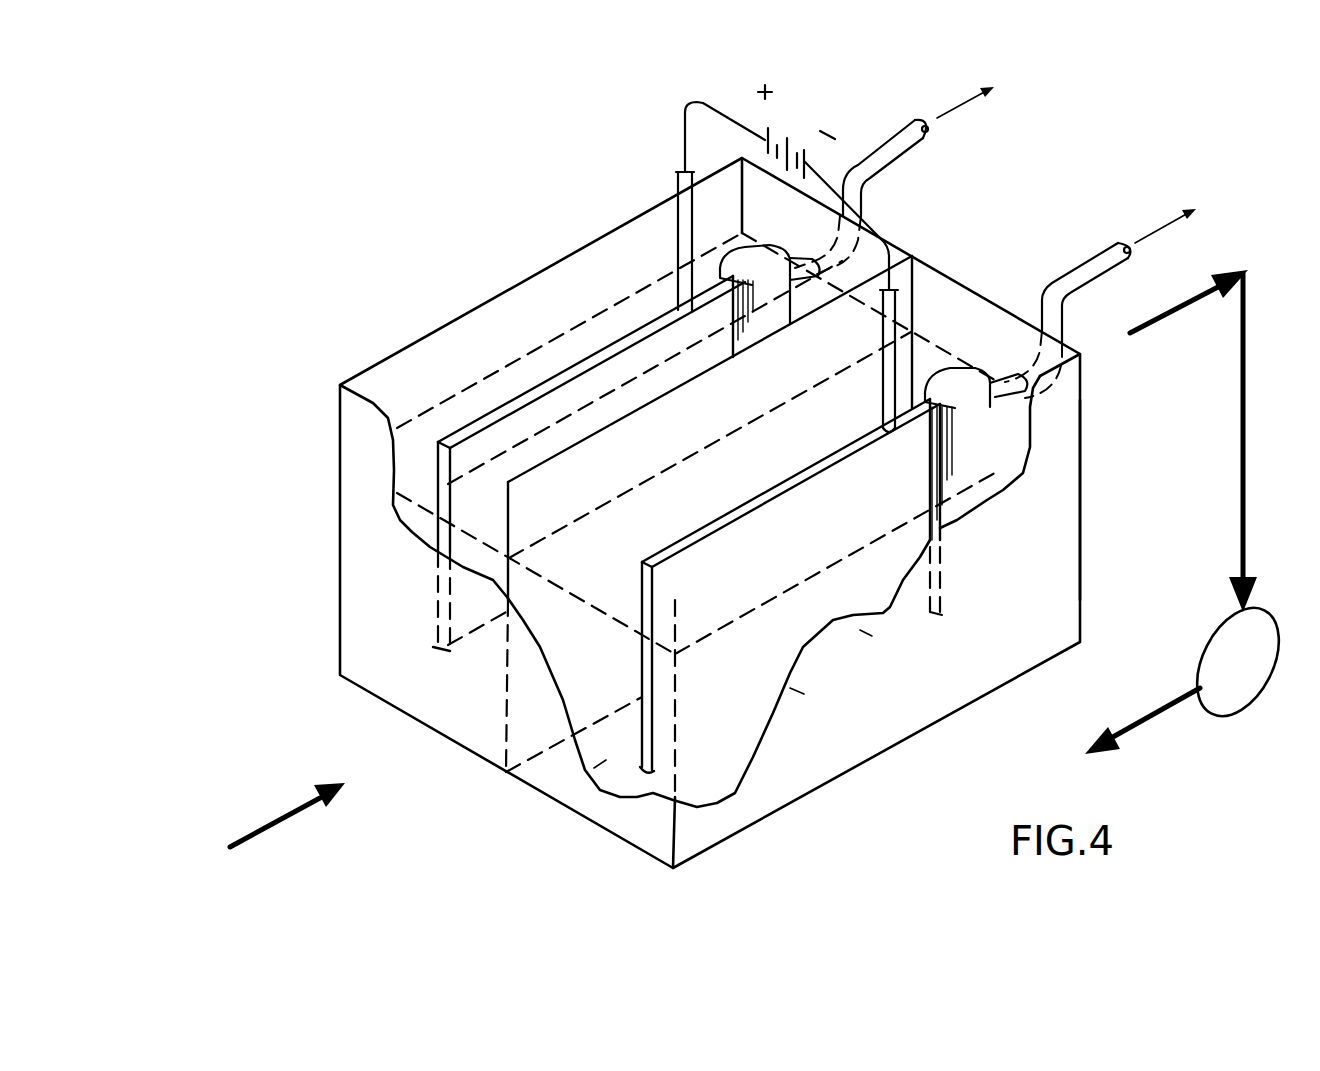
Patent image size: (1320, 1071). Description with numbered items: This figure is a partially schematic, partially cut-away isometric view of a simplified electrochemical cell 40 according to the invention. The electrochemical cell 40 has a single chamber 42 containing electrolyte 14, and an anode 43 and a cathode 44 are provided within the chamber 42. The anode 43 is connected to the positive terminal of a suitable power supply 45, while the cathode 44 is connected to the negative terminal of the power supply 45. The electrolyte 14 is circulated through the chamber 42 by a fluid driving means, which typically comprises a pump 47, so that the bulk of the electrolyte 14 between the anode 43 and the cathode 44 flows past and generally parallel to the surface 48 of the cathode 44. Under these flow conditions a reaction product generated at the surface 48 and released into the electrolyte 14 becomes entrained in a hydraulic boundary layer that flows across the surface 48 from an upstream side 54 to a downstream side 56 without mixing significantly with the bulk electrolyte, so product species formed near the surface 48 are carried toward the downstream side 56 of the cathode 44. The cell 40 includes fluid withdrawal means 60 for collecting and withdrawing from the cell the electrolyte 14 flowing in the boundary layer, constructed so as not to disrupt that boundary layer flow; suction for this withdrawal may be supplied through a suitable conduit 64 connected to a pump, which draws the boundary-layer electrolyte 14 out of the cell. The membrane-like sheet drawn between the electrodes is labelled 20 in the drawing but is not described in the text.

The electrochemical cell 40 is at (420, 176).
The chamber 42 is at (494, 298).
The fluid withdrawal means 60 is at (993, 552).
The membrane 20 is at (505, 693).
The electrolyte 14 is at (438, 408).
The anode 43 is at (617, 337).
The power supply 45 is at (792, 132).
The conduit 64 is at (918, 128).
The pump 47 is at (1235, 714).
The cathode 44 is at (797, 690).
The surface 48 is at (866, 632).
The downstream side 56 is at (940, 617).
The upstream side 54 is at (600, 763).